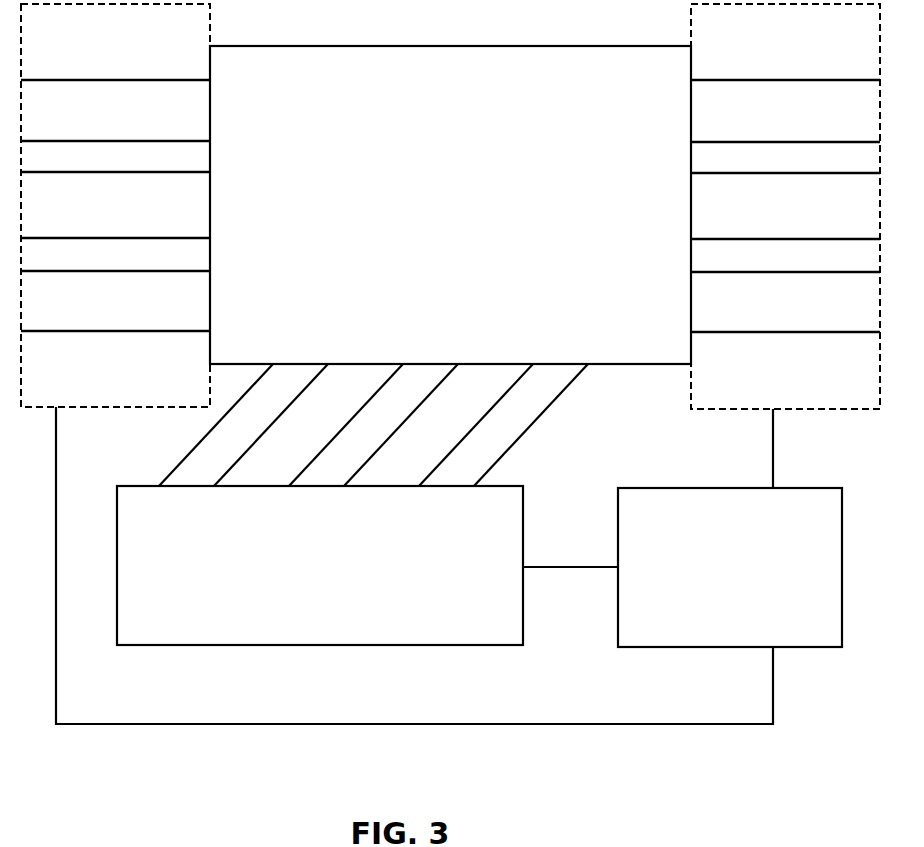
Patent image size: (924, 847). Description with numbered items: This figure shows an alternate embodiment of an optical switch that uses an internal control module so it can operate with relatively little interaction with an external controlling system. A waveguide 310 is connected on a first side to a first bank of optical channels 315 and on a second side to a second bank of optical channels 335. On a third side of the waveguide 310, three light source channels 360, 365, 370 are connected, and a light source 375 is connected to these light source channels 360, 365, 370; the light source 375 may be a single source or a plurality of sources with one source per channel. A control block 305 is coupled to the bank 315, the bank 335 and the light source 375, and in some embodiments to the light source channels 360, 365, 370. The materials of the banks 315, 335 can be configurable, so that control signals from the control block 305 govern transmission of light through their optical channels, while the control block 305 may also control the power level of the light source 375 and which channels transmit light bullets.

The control block 305 is at (704, 581).
The waveguide 310 is at (425, 120).
The first bank of optical channels 315 is at (91, 382).
The second bank of optical channels 335 is at (759, 385).
The light source channel 360 is at (258, 417).
The light source channel 365 is at (388, 417).
The light source channel 370 is at (520, 417).
The light source 375 is at (295, 580).